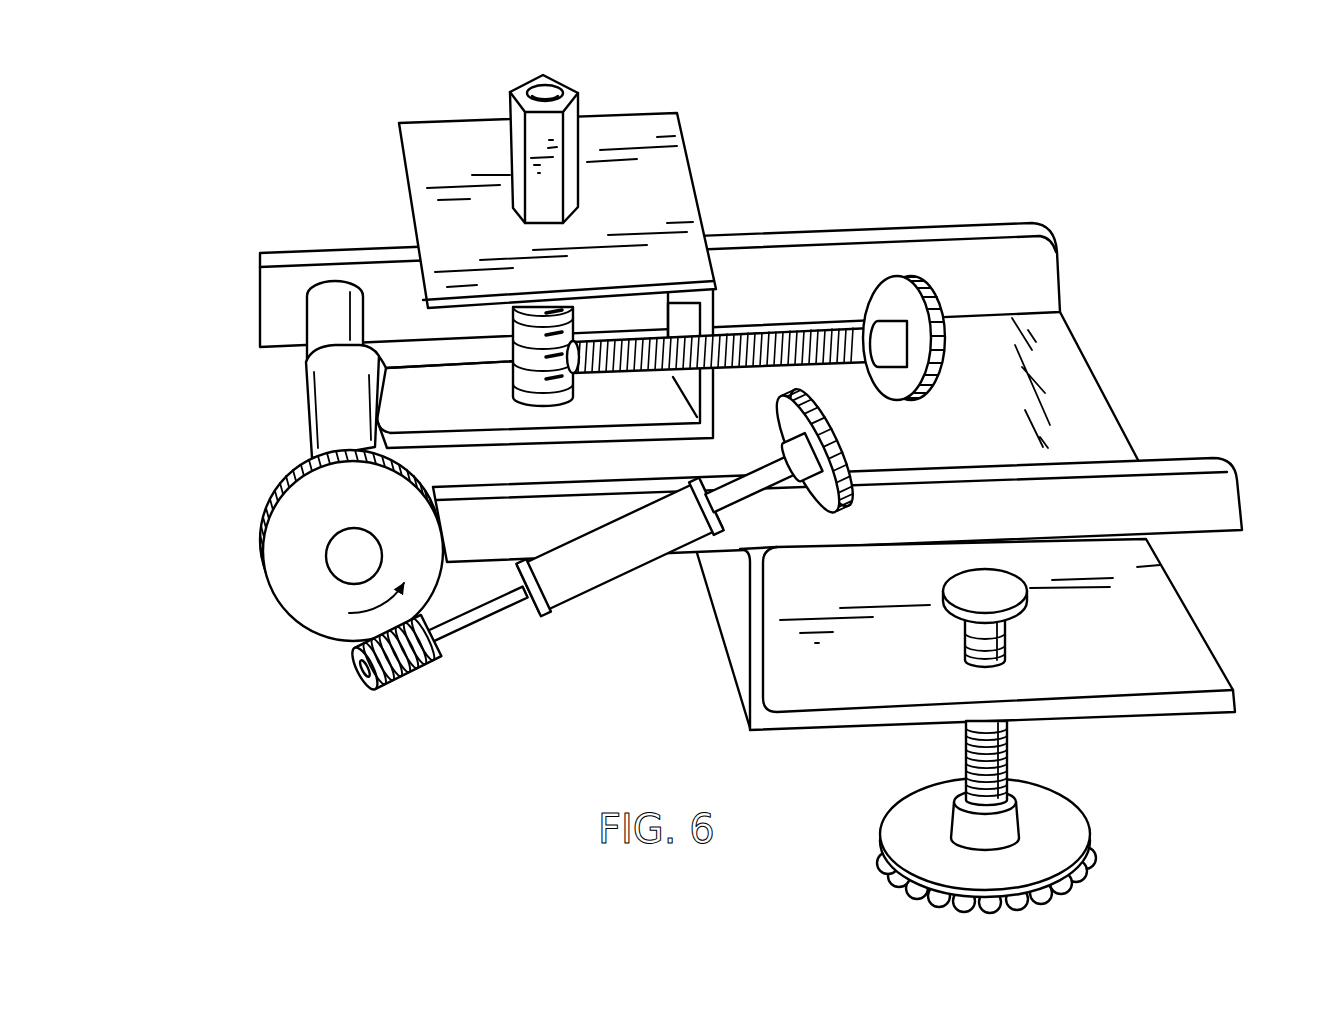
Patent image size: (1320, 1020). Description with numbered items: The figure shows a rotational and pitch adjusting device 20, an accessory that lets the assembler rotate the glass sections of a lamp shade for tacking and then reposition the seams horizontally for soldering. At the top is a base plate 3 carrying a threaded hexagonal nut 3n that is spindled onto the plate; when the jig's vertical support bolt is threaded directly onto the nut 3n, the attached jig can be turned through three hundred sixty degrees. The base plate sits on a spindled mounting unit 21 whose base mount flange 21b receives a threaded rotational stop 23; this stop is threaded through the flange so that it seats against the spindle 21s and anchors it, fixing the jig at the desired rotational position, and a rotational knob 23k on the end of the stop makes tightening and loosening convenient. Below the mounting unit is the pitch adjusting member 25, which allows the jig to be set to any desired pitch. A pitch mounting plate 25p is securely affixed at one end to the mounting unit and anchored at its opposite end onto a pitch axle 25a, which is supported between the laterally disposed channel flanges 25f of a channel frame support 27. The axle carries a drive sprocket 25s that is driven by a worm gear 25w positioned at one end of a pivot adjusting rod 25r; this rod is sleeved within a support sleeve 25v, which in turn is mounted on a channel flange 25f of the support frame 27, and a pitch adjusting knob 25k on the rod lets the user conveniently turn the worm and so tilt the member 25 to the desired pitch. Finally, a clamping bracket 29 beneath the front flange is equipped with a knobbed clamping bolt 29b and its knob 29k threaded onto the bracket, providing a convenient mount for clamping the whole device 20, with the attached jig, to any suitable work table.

The base plate 3 is at (569, 124).
The threaded hexagonal nut 3n is at (517, 63).
The rotational and pitch adjusting device 20 is at (786, 488).
The spindled mounting unit 21 is at (565, 250).
The base mount flange 21b is at (724, 318).
The spindle 21s is at (489, 368).
The threaded rotational stop 23 is at (811, 330).
The rotational knob 23k is at (960, 340).
The pitch adjusting member 25 is at (268, 369).
The pitch mounting plate 25p is at (303, 417).
The channel flange 25f is at (1250, 510).
The drive sprocket 25s is at (285, 558).
The pitch axle 25a is at (333, 582).
The worm gear 25w is at (412, 675).
The pivot adjusting rod 25r is at (505, 618).
The support sleeve 25v is at (631, 580).
The pitch adjusting knob 25k is at (858, 517).
The channel frame support 27 is at (1108, 388).
The clamping bracket 29 is at (993, 729).
The knobbed clamping bolt 29b is at (1012, 767).
The knob 29k is at (1097, 840).